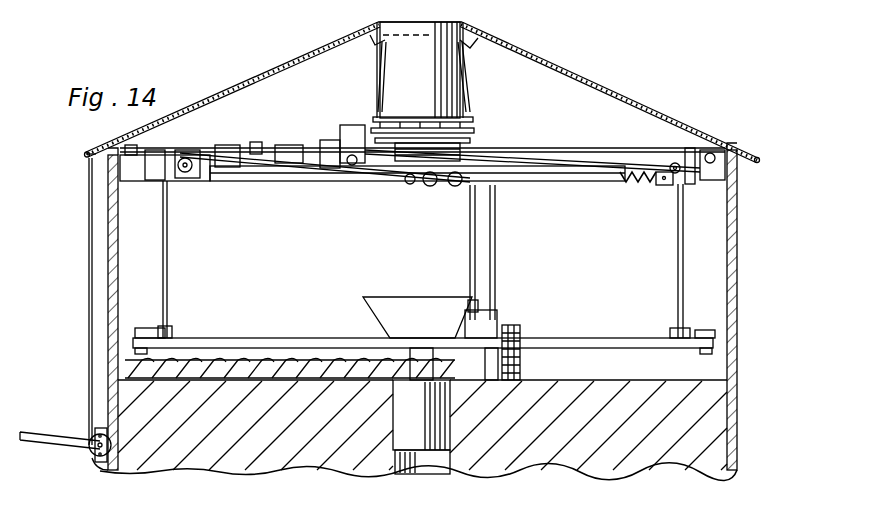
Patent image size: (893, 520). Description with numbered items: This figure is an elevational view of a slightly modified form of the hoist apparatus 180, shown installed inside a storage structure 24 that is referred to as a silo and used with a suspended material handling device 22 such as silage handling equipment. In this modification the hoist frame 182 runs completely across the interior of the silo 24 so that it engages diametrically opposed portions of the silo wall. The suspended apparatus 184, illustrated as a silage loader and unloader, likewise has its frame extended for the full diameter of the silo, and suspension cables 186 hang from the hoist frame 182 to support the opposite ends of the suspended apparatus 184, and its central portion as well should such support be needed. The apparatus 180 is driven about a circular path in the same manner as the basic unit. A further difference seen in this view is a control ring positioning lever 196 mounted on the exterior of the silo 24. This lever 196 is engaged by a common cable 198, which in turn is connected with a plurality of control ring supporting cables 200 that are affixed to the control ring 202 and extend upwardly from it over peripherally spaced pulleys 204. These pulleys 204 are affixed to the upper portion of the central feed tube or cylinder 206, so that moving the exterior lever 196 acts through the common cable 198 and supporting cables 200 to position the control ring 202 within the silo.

The suspended material handling device 22 is at (261, 336).
The storage structure 24 is at (106, 270).
The modified form of apparatus 180 is at (567, 147).
The hoist frame 182 is at (556, 182).
The suspended apparatus 184 is at (614, 332).
The suspension cables 186 is at (677, 262).
The control ring positioning lever 196 is at (35, 432).
The common cable 198 is at (89, 331).
The control ring supporting cables 200 is at (470, 76).
The control ring 202 is at (478, 128).
The pulleys 204 is at (475, 40).
The feed tube or cylinder 206 is at (392, 82).